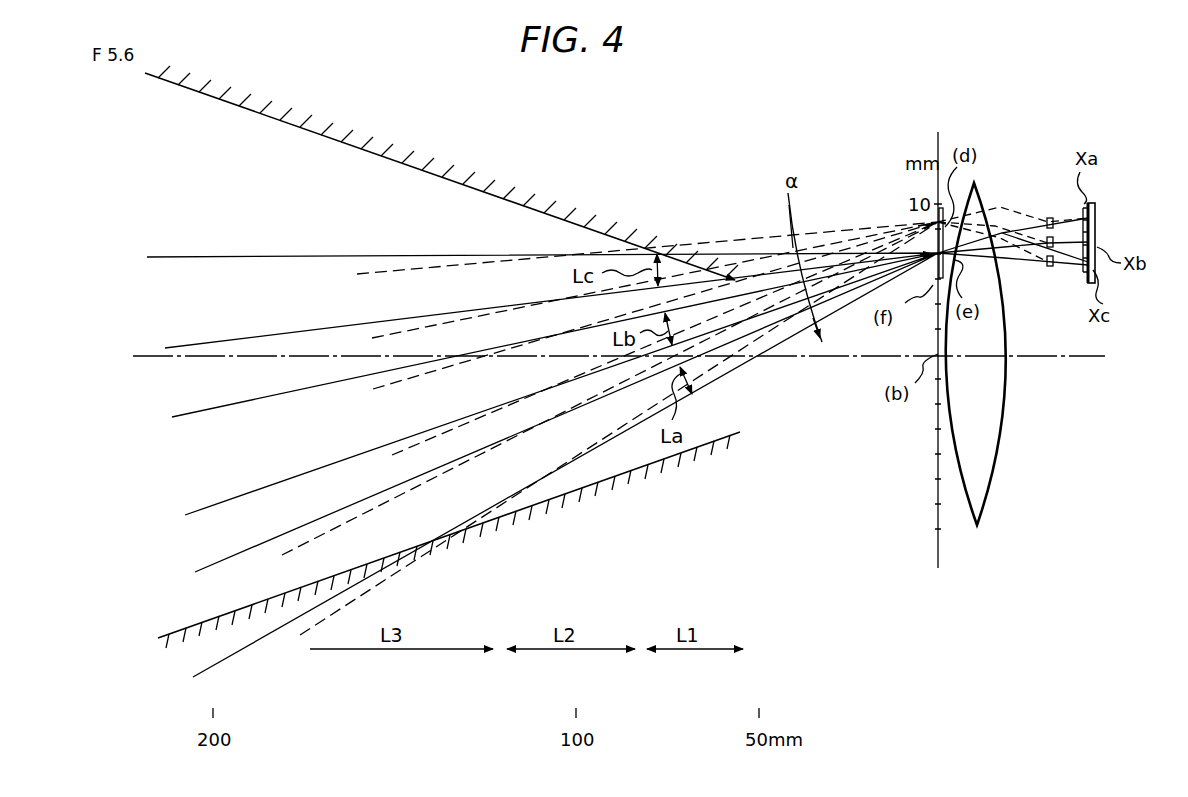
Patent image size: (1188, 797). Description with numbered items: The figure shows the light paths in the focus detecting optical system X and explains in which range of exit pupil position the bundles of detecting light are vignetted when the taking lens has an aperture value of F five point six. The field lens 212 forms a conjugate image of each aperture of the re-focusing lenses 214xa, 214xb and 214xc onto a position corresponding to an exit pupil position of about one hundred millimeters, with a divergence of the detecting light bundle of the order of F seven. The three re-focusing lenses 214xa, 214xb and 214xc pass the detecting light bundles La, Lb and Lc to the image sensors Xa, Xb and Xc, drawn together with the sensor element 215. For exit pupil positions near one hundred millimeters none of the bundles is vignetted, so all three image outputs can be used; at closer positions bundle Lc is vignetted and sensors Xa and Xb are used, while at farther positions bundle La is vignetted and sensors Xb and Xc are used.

The field lens 212 is at (985, 520).
The image sensor array 215 is at (1097, 205).
The re-focusing lens 214xa is at (1050, 216).
The re-focusing lens 214xb is at (1057, 250).
The re-focusing lens 214xc is at (1052, 268).